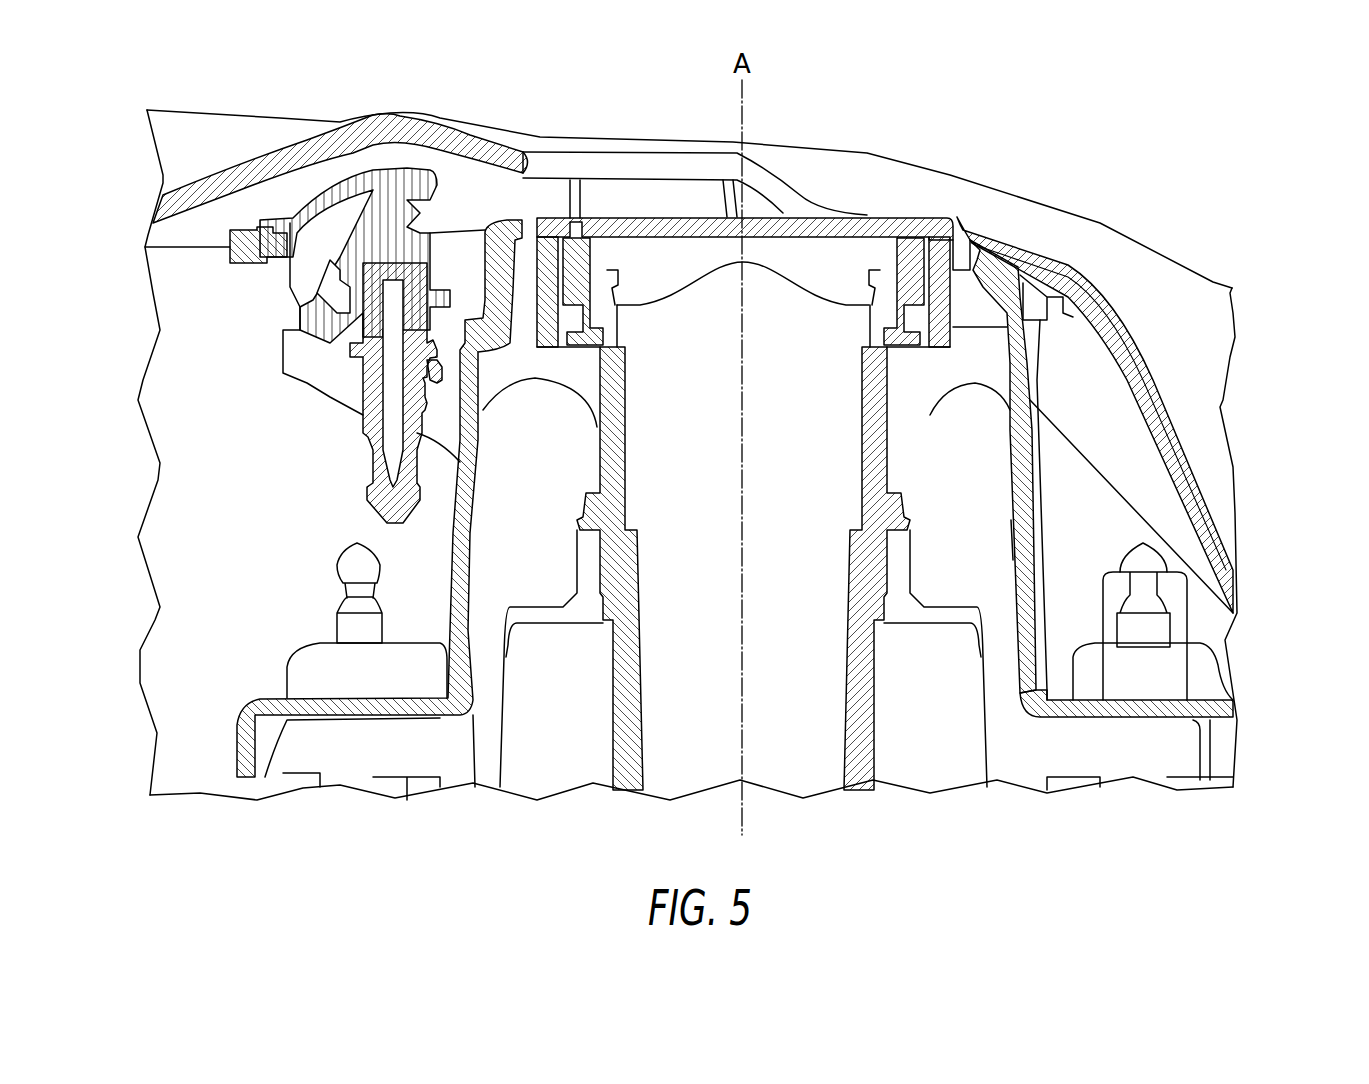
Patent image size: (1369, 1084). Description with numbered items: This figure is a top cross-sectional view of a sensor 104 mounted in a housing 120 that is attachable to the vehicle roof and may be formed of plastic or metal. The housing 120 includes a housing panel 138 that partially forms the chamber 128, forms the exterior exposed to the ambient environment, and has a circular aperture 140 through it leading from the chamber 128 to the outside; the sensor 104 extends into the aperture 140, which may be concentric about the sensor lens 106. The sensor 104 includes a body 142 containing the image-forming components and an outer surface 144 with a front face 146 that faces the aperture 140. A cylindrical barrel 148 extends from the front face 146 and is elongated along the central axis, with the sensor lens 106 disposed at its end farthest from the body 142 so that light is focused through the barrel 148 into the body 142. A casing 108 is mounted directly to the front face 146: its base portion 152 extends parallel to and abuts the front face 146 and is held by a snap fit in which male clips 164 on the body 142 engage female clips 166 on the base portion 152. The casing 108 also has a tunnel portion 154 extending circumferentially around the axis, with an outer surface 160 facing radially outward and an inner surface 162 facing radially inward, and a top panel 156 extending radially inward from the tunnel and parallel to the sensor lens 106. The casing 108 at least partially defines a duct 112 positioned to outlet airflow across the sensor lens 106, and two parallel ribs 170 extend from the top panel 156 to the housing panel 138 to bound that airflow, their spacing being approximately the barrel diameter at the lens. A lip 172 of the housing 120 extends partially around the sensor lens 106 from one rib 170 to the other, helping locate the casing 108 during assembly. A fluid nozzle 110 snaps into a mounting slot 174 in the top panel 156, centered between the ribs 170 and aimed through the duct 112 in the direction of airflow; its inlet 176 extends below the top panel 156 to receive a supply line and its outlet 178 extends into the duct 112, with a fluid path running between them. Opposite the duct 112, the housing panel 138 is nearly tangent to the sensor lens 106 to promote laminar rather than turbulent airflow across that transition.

The sensor 104 is at (1217, 753).
The sensor lens 106 is at (867, 213).
The casing 108 is at (1028, 518).
The fluid nozzle 110 is at (375, 163).
The duct 112 is at (530, 193).
The housing 120 is at (1220, 275).
The chamber 128 is at (190, 502).
The housing panel 138 is at (1130, 327).
The aperture 140 is at (957, 213).
The body 142 is at (1130, 740).
The outer surface 144 is at (473, 700).
The front face 146 is at (393, 710).
The barrel 148 is at (880, 467).
The base portion 152 is at (307, 693).
The tunnel portion 154 is at (1020, 438).
The top panel 156 is at (486, 228).
The outer surface 160 is at (1042, 572).
The inner surface 162 is at (1012, 543).
The male clip 164 is at (347, 552).
The female clip 166 is at (1193, 613).
The rib 170 is at (627, 193).
The lip 172 is at (1058, 322).
The mounting slot 174 is at (280, 265).
The inlet 176 is at (367, 490).
The outlet 178 is at (417, 173).